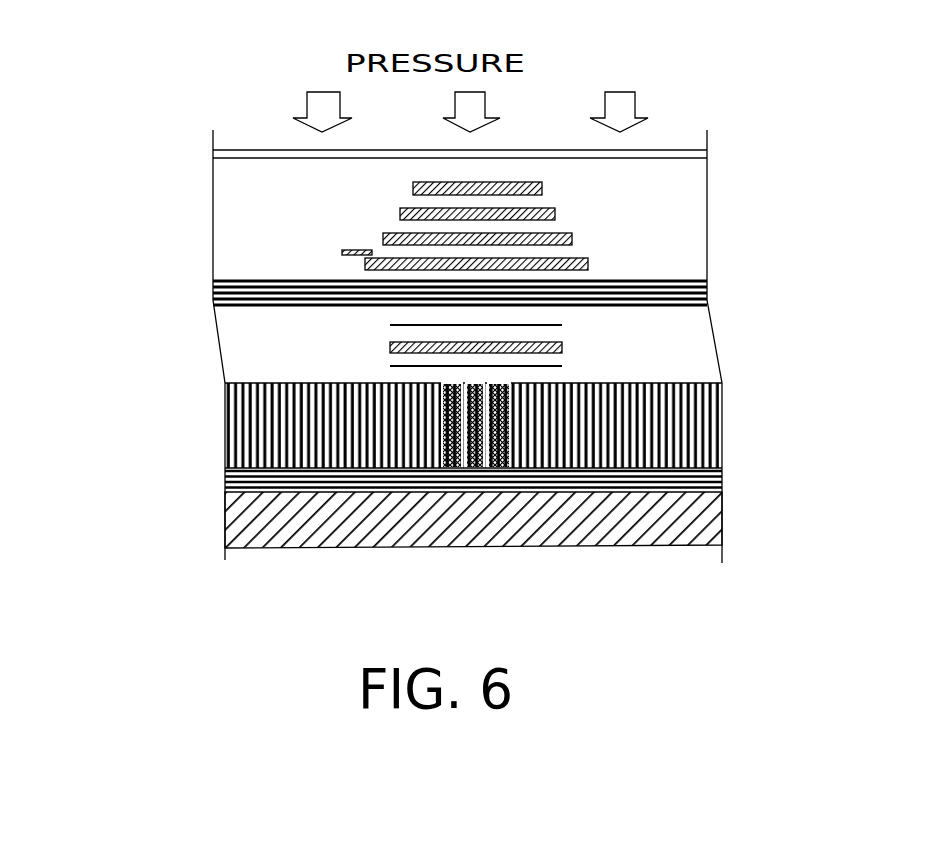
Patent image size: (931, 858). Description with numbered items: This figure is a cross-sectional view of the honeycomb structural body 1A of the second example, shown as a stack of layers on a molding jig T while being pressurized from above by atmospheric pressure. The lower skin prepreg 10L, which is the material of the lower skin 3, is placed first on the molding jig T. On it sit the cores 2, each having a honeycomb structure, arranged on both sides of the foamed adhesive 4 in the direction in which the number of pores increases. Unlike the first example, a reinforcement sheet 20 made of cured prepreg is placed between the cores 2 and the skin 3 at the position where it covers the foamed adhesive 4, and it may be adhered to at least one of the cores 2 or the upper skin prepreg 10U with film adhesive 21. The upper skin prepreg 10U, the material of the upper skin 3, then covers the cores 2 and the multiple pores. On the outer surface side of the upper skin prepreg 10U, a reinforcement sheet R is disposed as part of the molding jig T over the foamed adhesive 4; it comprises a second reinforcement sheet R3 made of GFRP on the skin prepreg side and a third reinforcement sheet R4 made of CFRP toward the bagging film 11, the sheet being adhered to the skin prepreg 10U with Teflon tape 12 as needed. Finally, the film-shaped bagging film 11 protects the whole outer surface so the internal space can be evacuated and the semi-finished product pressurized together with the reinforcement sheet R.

The bagging film 11 is at (660, 150).
The Teflon tape 12 is at (577, 256).
The reinforcement sheet R is at (410, 227).
The third reinforcement sheet R4 is at (413, 188).
The second reinforcement sheet R3 is at (365, 266).
The upper skin prepreg 10U is at (213, 283).
The skin 3 is at (740, 282).
The reinforcement sheet 20 is at (390, 347).
The film adhesive 21 is at (485, 323).
The foamed adhesive 4 is at (467, 383).
The cores 2 is at (225, 435).
The lower skin prepreg 10L is at (225, 483).
The molding jig T is at (225, 530).
The honeycomb structural body 1A is at (110, 280).